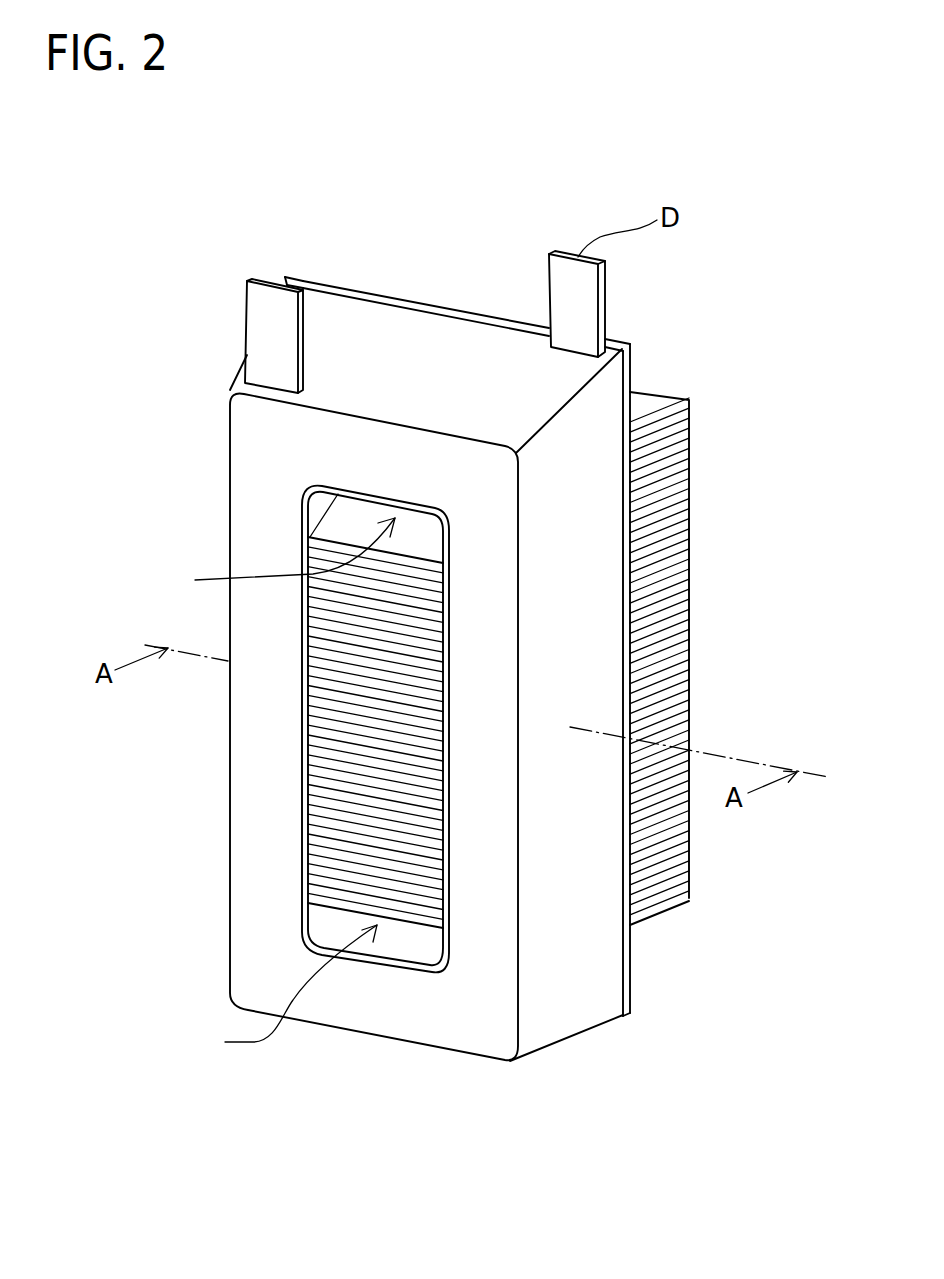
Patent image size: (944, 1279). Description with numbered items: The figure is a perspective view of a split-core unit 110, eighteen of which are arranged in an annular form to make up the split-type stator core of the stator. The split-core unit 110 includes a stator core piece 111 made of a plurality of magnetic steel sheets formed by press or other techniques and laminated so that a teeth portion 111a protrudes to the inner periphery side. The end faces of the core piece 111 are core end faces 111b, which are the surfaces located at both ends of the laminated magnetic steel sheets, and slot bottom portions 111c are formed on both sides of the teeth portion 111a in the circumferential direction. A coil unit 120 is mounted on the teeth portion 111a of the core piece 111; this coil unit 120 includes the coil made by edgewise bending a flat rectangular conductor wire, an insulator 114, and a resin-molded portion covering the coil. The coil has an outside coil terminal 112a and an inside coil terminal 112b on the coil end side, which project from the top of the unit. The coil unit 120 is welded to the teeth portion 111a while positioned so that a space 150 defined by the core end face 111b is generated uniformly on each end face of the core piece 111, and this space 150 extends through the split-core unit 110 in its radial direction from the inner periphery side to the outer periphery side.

The split-core unit 110 is at (645, 1124).
The stator core piece 111 is at (726, 629).
The teeth portion 111a is at (365, 828).
The core end face 111b is at (366, 527).
The slot bottom portion 111c is at (628, 612).
The outside coil terminal 112a is at (578, 298).
The inside coil terminal 112b is at (268, 317).
The insulator 114 is at (628, 486).
The coil unit 120 is at (568, 842).
The space 150 is at (269, 788).